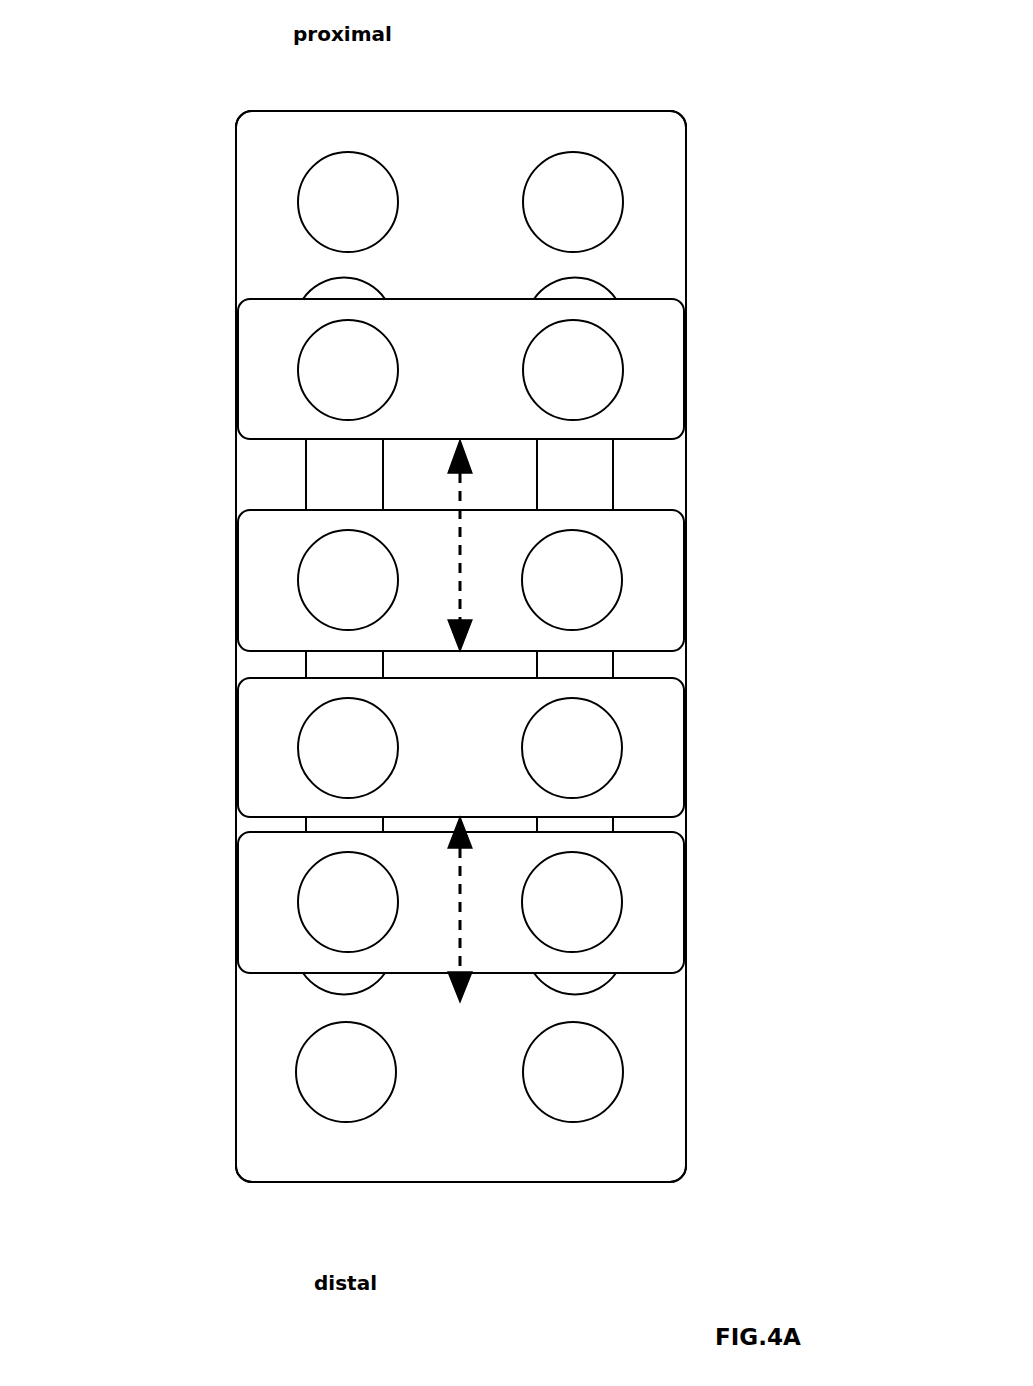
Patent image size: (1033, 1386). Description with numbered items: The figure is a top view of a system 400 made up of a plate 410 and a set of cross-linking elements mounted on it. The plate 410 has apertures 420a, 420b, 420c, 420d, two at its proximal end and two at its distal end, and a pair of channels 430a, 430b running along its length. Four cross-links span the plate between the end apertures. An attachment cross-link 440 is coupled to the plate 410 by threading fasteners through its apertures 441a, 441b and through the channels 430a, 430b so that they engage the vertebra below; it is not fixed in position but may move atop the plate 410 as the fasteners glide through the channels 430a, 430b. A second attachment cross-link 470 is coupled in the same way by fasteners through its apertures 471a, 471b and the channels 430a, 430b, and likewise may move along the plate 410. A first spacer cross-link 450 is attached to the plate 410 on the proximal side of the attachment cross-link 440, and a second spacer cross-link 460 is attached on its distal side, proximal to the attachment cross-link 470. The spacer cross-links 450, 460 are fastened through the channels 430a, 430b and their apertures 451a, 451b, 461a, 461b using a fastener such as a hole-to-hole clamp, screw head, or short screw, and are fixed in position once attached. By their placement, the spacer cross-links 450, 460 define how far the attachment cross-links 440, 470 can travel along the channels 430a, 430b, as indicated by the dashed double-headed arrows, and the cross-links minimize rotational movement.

The system 400 is at (600, 91).
The plate 410 is at (265, 272).
The aperture 420a is at (320, 202).
The aperture 420b is at (592, 202).
The aperture 420c is at (320, 1070).
The aperture 420d is at (592, 1070).
The channel 430a is at (320, 492).
The channel 430b is at (600, 482).
The attachment cross-link 440 is at (265, 620).
The aperture 441a is at (325, 578).
The aperture 441b is at (600, 580).
The first spacer cross-link 450 is at (265, 418).
The aperture 451a is at (320, 370).
The aperture 451b is at (592, 370).
The second spacer cross-link 460 is at (278, 776).
The aperture 461a is at (335, 762).
The aperture 461b is at (600, 735).
The attachment cross-link 470 is at (265, 945).
The aperture 471a is at (335, 902).
The aperture 471b is at (600, 902).